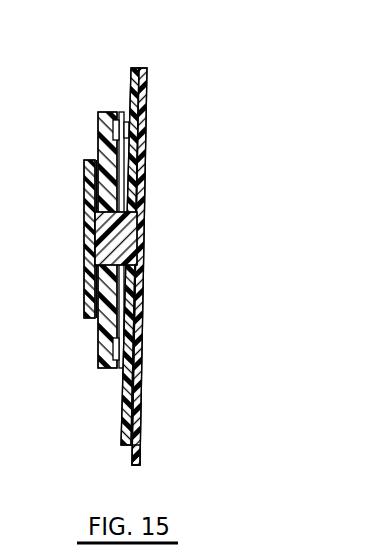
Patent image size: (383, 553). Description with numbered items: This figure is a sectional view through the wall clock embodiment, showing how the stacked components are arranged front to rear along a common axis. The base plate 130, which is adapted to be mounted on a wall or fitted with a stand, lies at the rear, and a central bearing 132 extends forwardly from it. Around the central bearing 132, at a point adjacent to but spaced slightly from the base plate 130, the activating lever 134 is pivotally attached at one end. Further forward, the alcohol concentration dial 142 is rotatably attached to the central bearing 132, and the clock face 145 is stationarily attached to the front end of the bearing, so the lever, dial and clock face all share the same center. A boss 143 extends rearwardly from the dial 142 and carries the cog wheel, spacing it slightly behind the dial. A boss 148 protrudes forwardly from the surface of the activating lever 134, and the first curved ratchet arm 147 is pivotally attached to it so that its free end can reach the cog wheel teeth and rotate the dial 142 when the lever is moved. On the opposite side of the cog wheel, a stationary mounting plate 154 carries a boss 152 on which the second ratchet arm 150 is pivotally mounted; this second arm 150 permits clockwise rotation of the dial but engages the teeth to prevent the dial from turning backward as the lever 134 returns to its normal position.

The base plate 130 is at (136, 298).
The central bearing 132 is at (125, 236).
The activating lever 134 is at (122, 444).
The alcohol concentration dial 142 is at (98, 114).
The boss 143 is at (95, 198).
The clock face 145 is at (85, 162).
The first curved ratchet arm 147 is at (118, 362).
The boss 148 is at (123, 370).
The second ratchet arm 150 is at (121, 124).
The boss 152 is at (127, 120).
The stationary mounting plate 154 is at (139, 68).